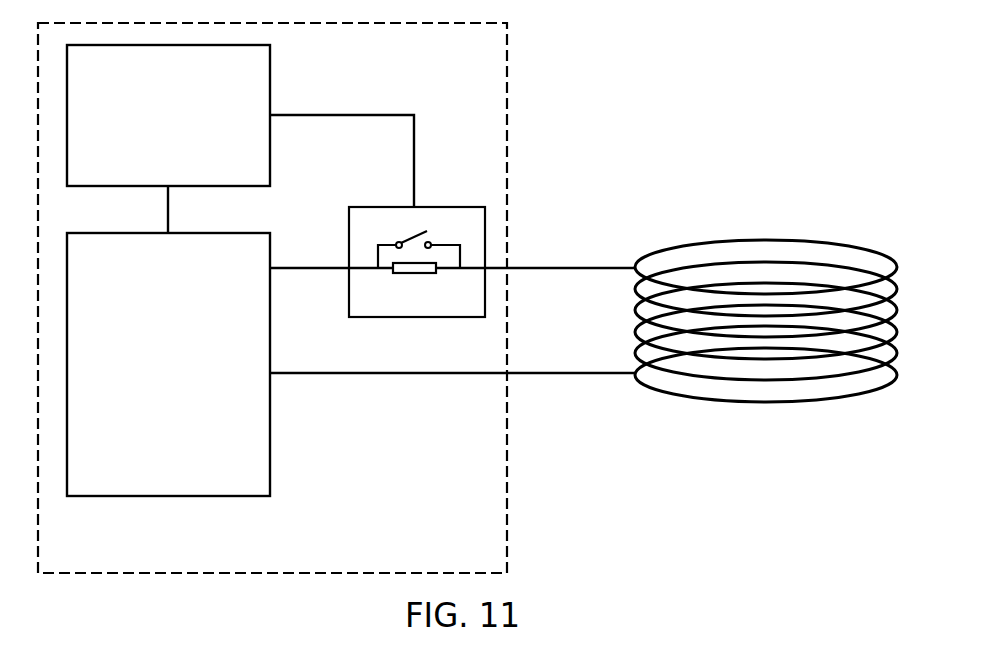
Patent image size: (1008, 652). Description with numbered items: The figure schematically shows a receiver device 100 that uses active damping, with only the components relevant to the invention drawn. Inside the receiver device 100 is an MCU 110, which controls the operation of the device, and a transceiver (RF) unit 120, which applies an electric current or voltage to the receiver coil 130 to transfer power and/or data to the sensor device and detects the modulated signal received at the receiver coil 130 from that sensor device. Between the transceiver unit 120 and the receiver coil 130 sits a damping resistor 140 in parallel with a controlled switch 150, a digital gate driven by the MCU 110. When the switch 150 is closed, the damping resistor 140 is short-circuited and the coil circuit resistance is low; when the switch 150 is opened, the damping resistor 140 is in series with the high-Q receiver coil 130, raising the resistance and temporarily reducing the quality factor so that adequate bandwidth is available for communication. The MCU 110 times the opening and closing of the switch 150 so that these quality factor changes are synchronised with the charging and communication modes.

The receiver device 100 is at (507, 97).
The MCU 110 is at (270, 85).
The transceiver (RF) unit 120 is at (270, 466).
The receiver coil 130 is at (793, 218).
The damping resistor 140 is at (450, 277).
The switch (digital gate) 150 is at (448, 231).